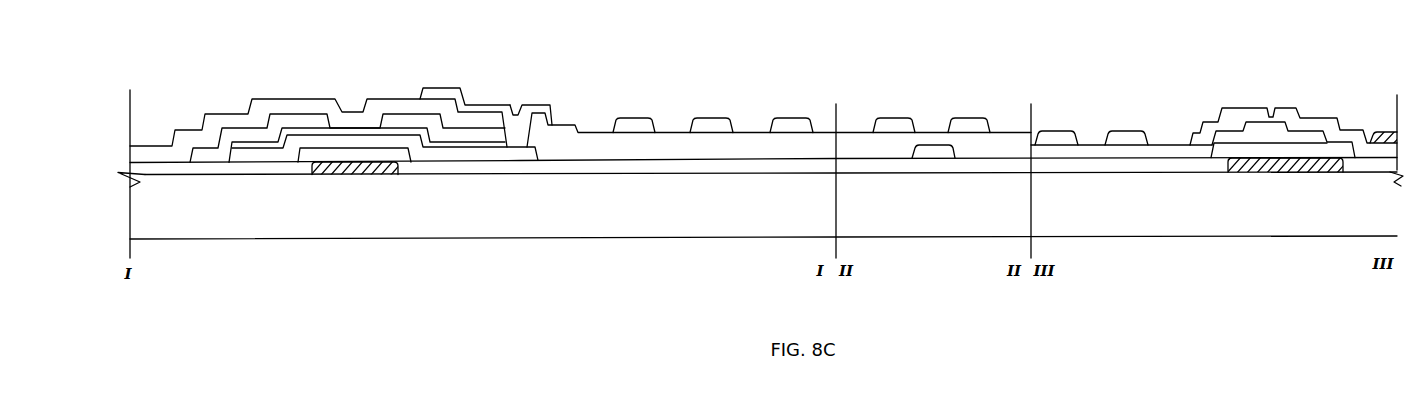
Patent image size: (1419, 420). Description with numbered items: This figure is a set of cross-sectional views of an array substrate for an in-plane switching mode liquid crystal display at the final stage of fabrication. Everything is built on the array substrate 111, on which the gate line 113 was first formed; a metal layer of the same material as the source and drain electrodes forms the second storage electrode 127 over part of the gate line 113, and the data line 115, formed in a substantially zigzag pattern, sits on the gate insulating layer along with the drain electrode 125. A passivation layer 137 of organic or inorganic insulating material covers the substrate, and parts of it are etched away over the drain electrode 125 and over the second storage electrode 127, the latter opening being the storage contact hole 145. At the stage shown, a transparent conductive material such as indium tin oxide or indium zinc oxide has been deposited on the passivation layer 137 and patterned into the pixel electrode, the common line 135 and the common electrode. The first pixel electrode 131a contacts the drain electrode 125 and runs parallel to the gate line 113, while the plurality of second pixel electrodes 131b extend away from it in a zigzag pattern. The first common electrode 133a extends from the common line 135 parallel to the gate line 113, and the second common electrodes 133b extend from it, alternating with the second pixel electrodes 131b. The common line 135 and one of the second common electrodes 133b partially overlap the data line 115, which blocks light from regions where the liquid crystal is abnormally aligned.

The array substrate 111 is at (688, 206).
The gate line 113 is at (1300, 176).
The data line 115 is at (932, 153).
The drain electrode 125 is at (403, 108).
The second storage electrode 127 is at (1318, 137).
The first pixel electrode 131a is at (453, 87).
The second pixel electrodes 131b is at (551, 104).
The first common electrode 133a is at (1376, 131).
The second common electrodes 133b is at (633, 118).
The common line 135 is at (905, 118).
The passivation layer 137 is at (303, 97).
The storage contact hole 145 is at (1270, 108).